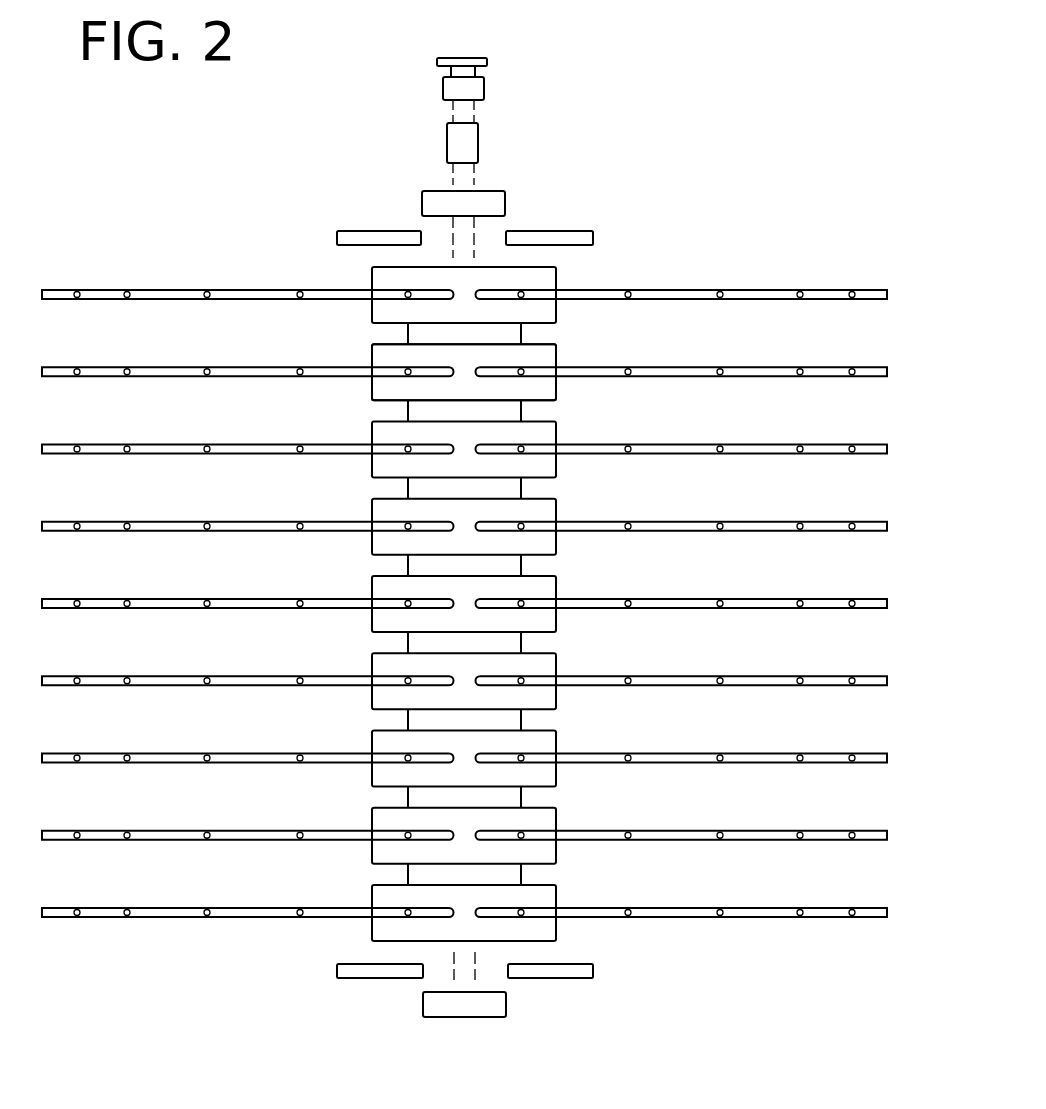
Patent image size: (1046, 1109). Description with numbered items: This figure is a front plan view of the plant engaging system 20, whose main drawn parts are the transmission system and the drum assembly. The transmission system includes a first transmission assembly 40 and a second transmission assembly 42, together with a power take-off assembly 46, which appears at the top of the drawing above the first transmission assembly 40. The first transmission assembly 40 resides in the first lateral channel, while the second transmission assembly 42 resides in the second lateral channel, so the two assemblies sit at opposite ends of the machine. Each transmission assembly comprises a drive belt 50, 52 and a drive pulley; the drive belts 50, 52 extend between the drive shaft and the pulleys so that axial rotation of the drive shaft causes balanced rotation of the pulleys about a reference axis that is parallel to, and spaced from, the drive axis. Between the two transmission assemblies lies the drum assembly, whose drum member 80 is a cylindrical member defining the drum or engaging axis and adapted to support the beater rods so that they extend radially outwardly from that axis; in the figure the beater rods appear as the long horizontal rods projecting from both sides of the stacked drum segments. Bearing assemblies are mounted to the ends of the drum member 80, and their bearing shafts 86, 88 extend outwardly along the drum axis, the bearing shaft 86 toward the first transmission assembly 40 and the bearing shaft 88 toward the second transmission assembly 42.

The plant engaging system 20 is at (250, 202).
The first transmission assembly 40 is at (547, 153).
The power take-off assembly 46 is at (507, 80).
The drive belt 50 is at (422, 205).
The bearing shaft 86 is at (473, 238).
The drum member 80 is at (497, 334).
The second transmission assembly 42 is at (557, 987).
The bearing shaft 88 is at (450, 972).
The drive belt 52 is at (448, 1008).